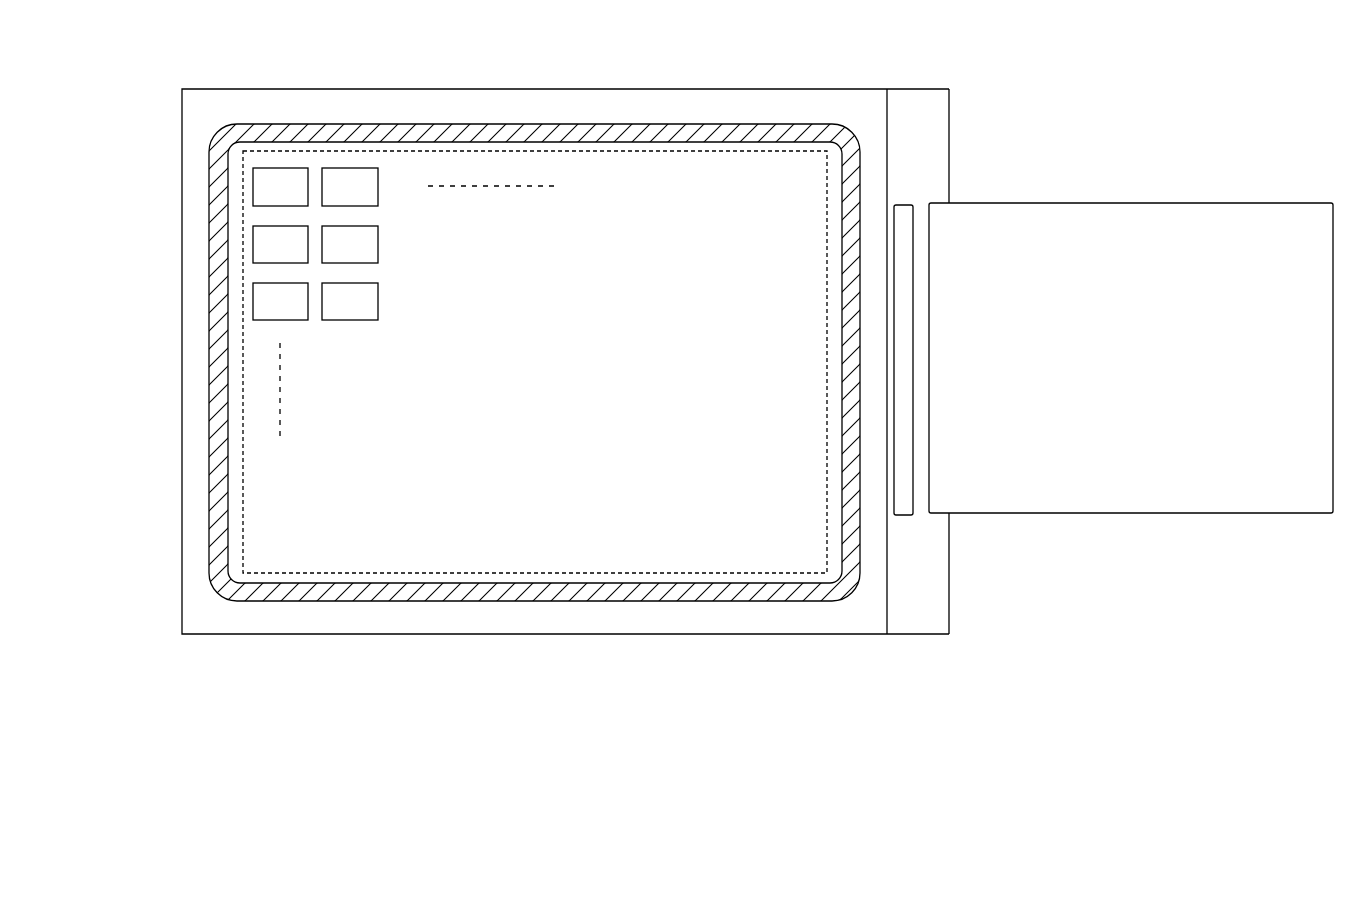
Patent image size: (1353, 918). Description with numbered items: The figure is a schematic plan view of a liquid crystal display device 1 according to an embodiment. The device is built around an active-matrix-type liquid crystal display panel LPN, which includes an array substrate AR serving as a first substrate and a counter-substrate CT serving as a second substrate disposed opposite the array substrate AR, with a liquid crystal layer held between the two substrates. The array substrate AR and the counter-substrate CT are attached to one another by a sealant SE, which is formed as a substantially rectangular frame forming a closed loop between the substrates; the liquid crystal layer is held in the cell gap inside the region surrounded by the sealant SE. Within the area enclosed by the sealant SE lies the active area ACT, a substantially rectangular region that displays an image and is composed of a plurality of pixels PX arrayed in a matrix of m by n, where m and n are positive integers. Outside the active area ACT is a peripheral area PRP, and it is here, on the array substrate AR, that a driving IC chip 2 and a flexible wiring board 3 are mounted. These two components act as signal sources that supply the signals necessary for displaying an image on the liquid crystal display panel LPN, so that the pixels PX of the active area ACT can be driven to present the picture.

The liquid crystal display device 1 is at (969, 77).
The driving IC chip 2 is at (906, 205).
The flexible wiring board 3 is at (1143, 212).
The pixel PX is at (283, 164).
The sealant SE is at (626, 112).
The peripheral area PRP is at (198, 432).
The active area ACT is at (618, 591).
The counter-substrate CT is at (827, 620).
The array substrate AR is at (948, 598).
The liquid crystal display panel LPN is at (921, 646).